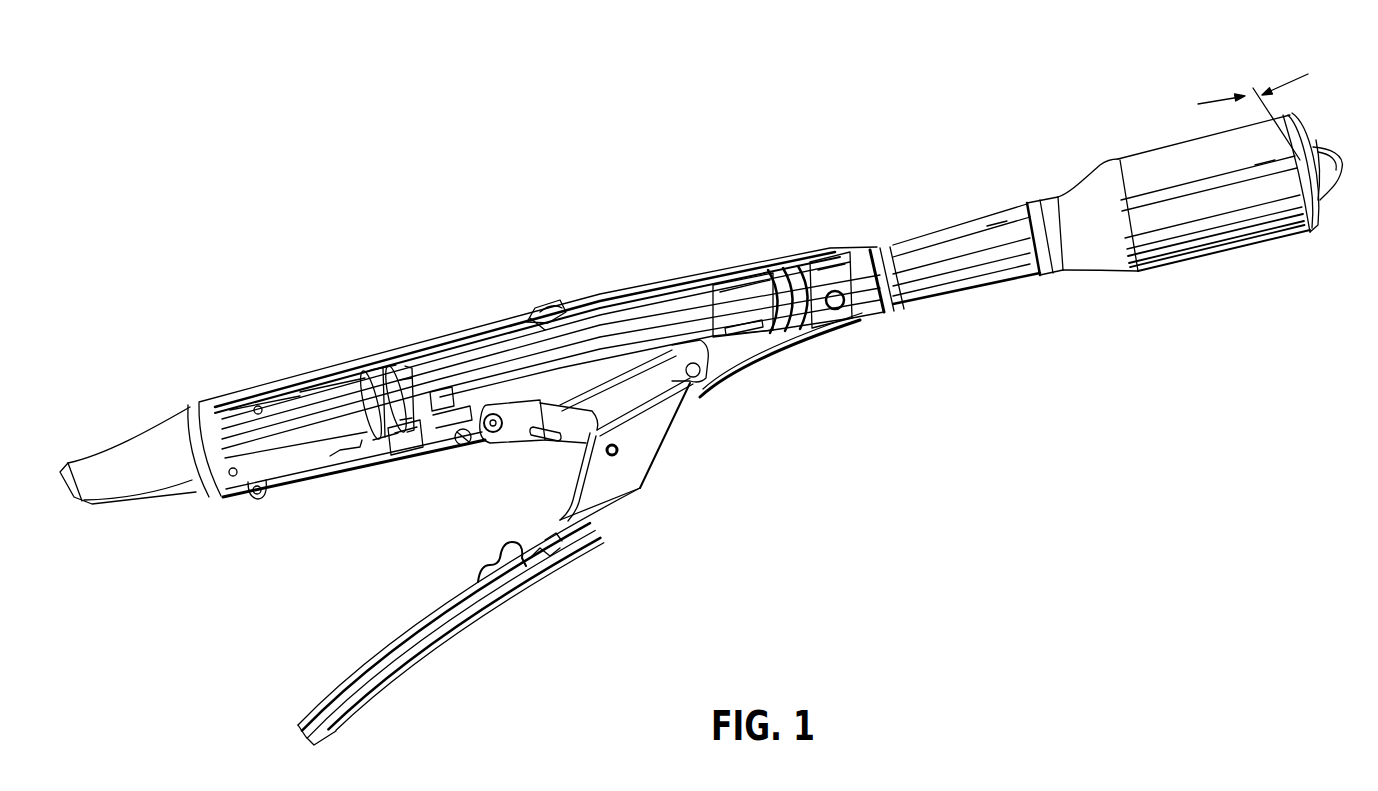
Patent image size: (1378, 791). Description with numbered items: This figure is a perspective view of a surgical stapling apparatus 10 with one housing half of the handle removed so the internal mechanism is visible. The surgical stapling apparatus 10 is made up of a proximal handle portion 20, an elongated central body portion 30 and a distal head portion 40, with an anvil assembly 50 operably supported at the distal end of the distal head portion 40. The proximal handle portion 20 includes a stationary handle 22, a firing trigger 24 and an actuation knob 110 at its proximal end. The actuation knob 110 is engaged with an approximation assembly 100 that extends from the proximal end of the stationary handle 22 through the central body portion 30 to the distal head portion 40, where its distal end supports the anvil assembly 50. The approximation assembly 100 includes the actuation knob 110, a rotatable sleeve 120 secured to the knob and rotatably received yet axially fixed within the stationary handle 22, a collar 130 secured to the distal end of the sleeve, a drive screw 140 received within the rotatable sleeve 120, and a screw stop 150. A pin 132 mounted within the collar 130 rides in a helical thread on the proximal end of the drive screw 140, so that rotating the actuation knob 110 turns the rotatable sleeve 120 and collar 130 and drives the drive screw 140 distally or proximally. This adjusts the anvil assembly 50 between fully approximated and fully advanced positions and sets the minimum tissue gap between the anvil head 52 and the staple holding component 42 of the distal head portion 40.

The surgical stapling apparatus 10 is at (717, 403).
The proximal handle portion 20 is at (482, 494).
The stationary handle 22 is at (337, 460).
The firing trigger 24 is at (538, 585).
The elongated central body portion 30 is at (942, 310).
The distal head portion 40 is at (1177, 175).
The staple holding component 42 is at (1298, 162).
The anvil assembly 50 is at (1335, 211).
The anvil head 52 is at (1297, 238).
The approximation assembly 100 is at (579, 388).
The actuation knob 110 is at (146, 432).
The rotatable sleeve 120 is at (300, 410).
The collar 130 is at (405, 435).
The pin 132 is at (390, 383).
The drive screw 140 is at (620, 330).
The screw stop 150 is at (538, 372).